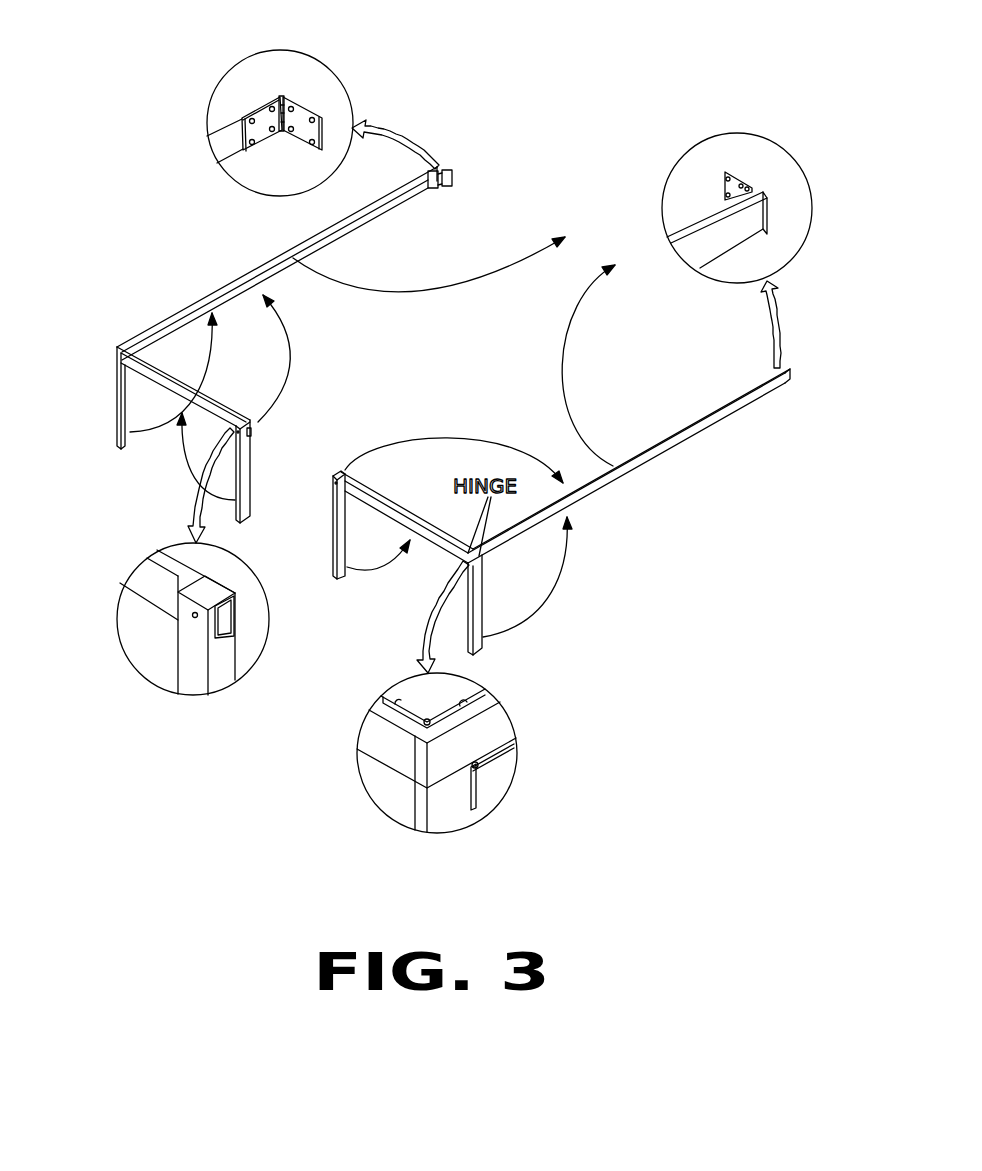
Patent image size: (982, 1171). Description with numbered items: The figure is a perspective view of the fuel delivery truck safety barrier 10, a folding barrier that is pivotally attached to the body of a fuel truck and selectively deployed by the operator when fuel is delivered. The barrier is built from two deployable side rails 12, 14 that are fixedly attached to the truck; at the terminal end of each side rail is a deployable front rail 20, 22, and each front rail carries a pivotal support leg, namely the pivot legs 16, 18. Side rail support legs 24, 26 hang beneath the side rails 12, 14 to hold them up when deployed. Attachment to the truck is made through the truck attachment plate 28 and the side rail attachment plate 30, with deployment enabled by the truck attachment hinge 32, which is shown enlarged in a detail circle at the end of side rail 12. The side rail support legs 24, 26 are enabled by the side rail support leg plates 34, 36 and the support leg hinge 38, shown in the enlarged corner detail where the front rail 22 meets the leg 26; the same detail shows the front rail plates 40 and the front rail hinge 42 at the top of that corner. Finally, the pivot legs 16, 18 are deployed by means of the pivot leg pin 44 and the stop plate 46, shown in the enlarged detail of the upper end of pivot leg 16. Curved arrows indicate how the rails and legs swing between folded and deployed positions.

The fuel delivery truck safety barrier 10 is at (213, 750).
The side rail 12 is at (278, 262).
The side rail 14 is at (682, 438).
The pivot leg 16 is at (238, 462).
The pivot leg 18 is at (332, 528).
The front rail 20 is at (162, 377).
The front rail 22 is at (435, 538).
The side rail support leg 24 is at (125, 438).
The side rail support leg 26 is at (475, 642).
The truck attachment plate 28 is at (313, 128).
The side rail attachment plate 30 is at (250, 130).
The truck attachment hinge 32 is at (282, 98).
The side rail support leg plate 34 is at (475, 793).
The side rail support leg plate 36 is at (513, 742).
The support leg hinge 38 is at (480, 767).
The front rail plate 40 is at (405, 709).
The front rail hinge 42 is at (425, 723).
The pivot leg pin 44 is at (197, 617).
The stop plate 46 is at (230, 618).